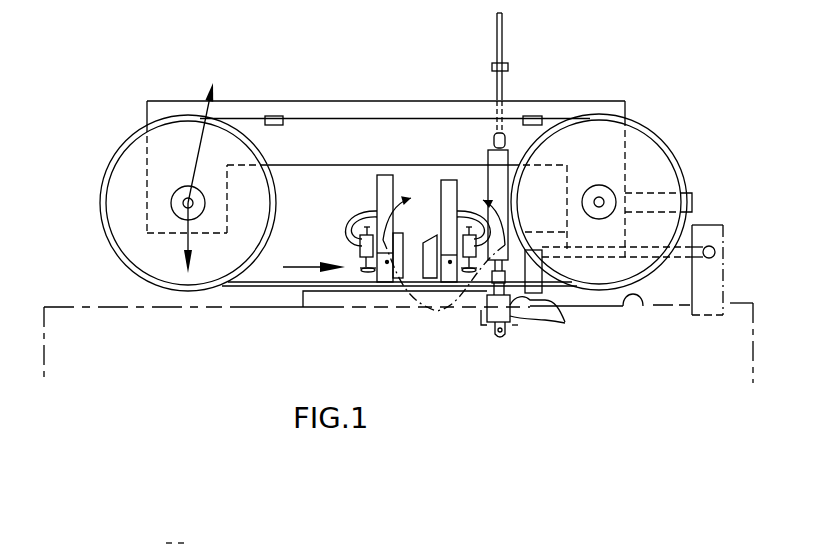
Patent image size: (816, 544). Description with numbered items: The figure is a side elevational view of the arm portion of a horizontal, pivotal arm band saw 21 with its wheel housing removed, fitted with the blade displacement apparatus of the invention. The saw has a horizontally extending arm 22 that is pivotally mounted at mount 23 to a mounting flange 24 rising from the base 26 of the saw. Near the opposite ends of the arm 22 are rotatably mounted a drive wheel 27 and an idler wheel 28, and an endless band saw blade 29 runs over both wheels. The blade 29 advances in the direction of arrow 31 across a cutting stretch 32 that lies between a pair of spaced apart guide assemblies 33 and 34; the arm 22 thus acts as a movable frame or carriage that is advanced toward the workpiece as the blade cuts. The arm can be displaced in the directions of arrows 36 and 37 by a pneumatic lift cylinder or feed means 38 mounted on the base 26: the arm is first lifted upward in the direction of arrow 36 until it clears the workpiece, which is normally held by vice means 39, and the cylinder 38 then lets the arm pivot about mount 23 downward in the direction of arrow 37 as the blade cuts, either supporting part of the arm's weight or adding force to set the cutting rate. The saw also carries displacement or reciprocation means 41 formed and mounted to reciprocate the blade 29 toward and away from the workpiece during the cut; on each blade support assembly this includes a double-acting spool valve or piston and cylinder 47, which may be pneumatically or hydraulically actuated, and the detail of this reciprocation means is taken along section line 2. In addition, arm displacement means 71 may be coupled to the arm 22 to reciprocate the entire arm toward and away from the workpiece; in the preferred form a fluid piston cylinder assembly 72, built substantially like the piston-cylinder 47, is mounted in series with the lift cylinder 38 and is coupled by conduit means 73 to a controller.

The section line 2- 2 is at (444, 242).
The band saw 21 is at (597, 93).
The arm 22 is at (146, 118).
The pivotal mount 23 is at (712, 246).
The mounting flange 24 is at (725, 273).
The base 26 is at (640, 313).
The drive wheel 27 is at (672, 148).
The idler wheel 28 is at (277, 205).
The band saw blade 29 is at (306, 118).
The arrow 31 is at (297, 268).
The cutting stretch 32 is at (433, 306).
The guide assembly 33 is at (386, 170).
The guide assembly 34 is at (453, 172).
The arrow 36 is at (200, 146).
The arrow 37 is at (193, 240).
The pneumatic lift cylinder 38 is at (510, 174).
The vice means 39 is at (405, 300).
The reciprocation means 41 is at (372, 279).
The double-acting spool valve or piston and cylinder 47 is at (346, 232).
The arm displacement means 71 is at (518, 344).
The fluid piston cylinder assembly 72 is at (494, 312).
The conduit means 73 is at (556, 323).